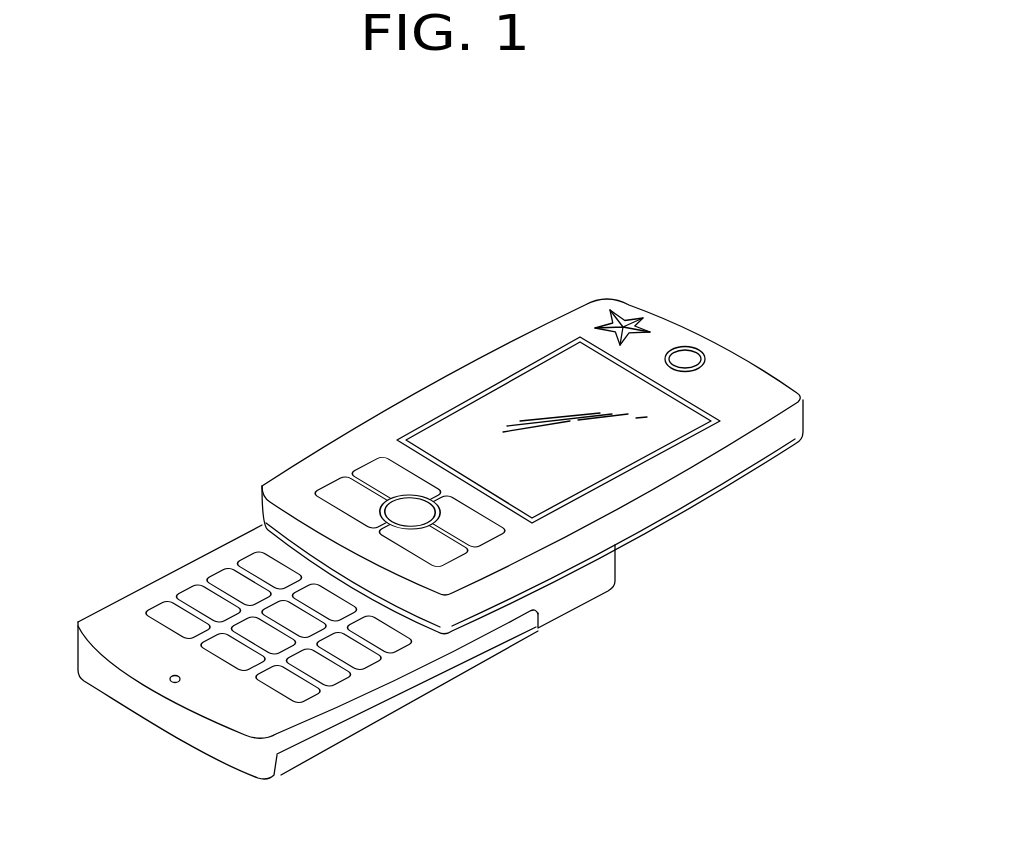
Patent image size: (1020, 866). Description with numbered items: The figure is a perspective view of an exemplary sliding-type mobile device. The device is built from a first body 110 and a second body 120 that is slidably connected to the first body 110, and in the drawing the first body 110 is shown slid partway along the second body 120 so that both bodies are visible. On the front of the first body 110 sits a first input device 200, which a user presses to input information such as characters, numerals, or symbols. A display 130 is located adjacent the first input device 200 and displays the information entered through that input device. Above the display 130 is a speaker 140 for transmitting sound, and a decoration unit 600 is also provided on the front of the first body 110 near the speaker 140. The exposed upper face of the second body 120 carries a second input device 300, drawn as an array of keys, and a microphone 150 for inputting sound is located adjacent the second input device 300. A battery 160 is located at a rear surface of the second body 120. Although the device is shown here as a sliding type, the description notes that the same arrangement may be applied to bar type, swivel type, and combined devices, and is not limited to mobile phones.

The first body 110 is at (683, 490).
The second body 120 is at (558, 598).
The display 130 is at (548, 373).
The speaker 140 is at (690, 350).
The microphone 150 is at (170, 681).
The battery 160 is at (440, 673).
The first input device 200 is at (343, 465).
The second input device 300 is at (189, 575).
The decoration unit 600 is at (627, 320).